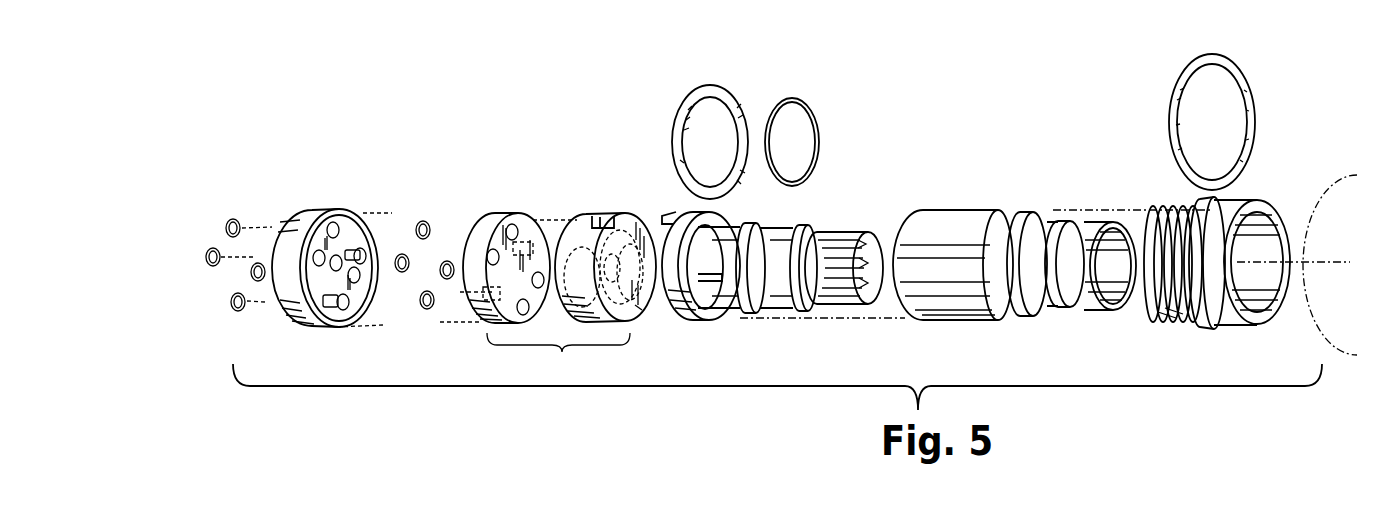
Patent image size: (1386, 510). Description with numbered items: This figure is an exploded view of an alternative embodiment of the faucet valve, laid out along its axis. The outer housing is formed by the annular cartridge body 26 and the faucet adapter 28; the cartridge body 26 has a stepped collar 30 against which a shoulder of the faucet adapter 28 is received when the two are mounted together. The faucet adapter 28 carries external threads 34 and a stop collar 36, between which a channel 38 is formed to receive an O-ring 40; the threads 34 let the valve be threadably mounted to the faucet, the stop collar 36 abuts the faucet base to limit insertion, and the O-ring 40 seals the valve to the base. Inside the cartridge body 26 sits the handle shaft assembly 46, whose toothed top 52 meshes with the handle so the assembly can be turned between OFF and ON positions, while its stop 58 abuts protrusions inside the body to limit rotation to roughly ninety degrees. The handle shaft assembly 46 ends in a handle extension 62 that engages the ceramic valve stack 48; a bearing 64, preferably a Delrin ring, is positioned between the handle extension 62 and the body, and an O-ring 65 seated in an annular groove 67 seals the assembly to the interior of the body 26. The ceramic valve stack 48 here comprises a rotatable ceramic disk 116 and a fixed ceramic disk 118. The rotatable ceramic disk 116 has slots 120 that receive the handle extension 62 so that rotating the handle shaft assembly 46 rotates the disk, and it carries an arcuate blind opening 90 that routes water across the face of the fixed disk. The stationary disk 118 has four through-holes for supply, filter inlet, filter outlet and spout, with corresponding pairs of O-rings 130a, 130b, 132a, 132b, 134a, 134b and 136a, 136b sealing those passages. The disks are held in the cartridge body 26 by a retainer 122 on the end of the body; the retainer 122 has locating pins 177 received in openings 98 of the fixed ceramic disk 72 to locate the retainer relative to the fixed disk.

The cartridge body 26 is at (963, 207).
The faucet adapter 28 is at (1254, 206).
The stepped collar 30 is at (1034, 213).
The external threads 34 is at (1182, 205).
The stop collar 36 is at (1211, 330).
The channel 38 is at (1171, 310).
The O-ring 40 is at (1168, 112).
The handle shaft assembly 46 is at (858, 232).
The ceramic valve stack 48 is at (571, 293).
The toothed top 52 is at (842, 307).
The stop 58 is at (712, 293).
The handle extension 62 is at (676, 211).
The bearing 64 is at (734, 100).
The O-ring 65 is at (810, 111).
The annular groove 67 is at (764, 226).
The fixed ceramic disk 72 is at (487, 223).
The arcuate blind opening 90 is at (640, 218).
The openings 98 is at (533, 247).
The rotatable ceramic disk 116 is at (583, 318).
The fixed ceramic disk 118 is at (473, 278).
The slots 120 is at (606, 229).
The retainer 122 is at (331, 205).
The O-ring 130a is at (233, 218).
The O-ring 130b is at (425, 220).
The O-ring 132a is at (209, 249).
The O-ring 132b is at (402, 253).
The O-ring 134a is at (231, 307).
The O-ring 134b is at (421, 306).
The O-ring 136a is at (257, 282).
The O-ring 136b is at (446, 280).
The locating pins 177 is at (358, 250).